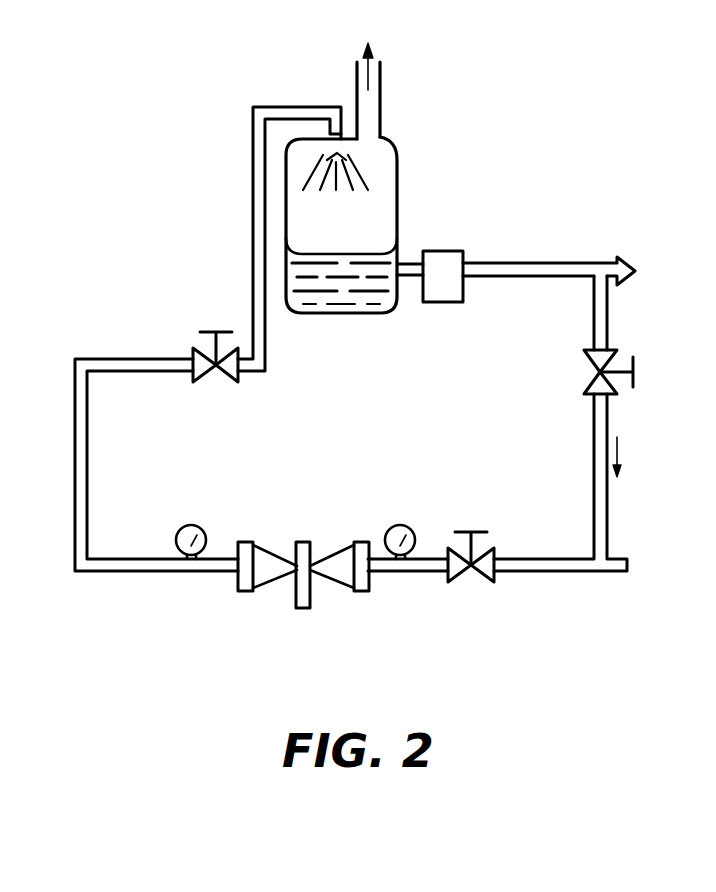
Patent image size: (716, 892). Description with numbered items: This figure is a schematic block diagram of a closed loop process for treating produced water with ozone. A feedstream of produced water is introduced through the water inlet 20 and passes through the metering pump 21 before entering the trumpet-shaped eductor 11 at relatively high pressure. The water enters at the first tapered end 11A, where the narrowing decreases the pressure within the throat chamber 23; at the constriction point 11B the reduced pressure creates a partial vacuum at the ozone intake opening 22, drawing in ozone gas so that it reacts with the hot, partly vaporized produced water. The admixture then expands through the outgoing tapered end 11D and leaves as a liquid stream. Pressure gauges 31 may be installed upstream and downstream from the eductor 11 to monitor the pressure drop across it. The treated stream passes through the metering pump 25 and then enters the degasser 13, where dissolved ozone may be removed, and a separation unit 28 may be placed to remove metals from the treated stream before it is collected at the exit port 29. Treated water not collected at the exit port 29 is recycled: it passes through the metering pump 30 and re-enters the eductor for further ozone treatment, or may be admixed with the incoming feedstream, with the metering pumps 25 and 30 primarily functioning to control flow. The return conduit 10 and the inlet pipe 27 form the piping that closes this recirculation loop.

The return conduit 10 is at (125, 573).
The eductor 11 is at (303, 533).
The first tapered end 11A is at (368, 585).
The constriction point 11B is at (312, 570).
The outgoing tapered end 11D is at (238, 583).
The degasser 13 is at (397, 190).
The water inlet 20 is at (637, 567).
The metering pump 21 is at (478, 535).
The ozone intake opening 22 is at (303, 613).
The throat chamber 23 is at (297, 585).
The metering pump 25 is at (207, 330).
The inlet pipe 27 is at (525, 573).
The separation unit 28 is at (446, 262).
The exit port 29 is at (627, 263).
The metering pump 30 is at (635, 363).
The pressure gauges 31 is at (192, 525).